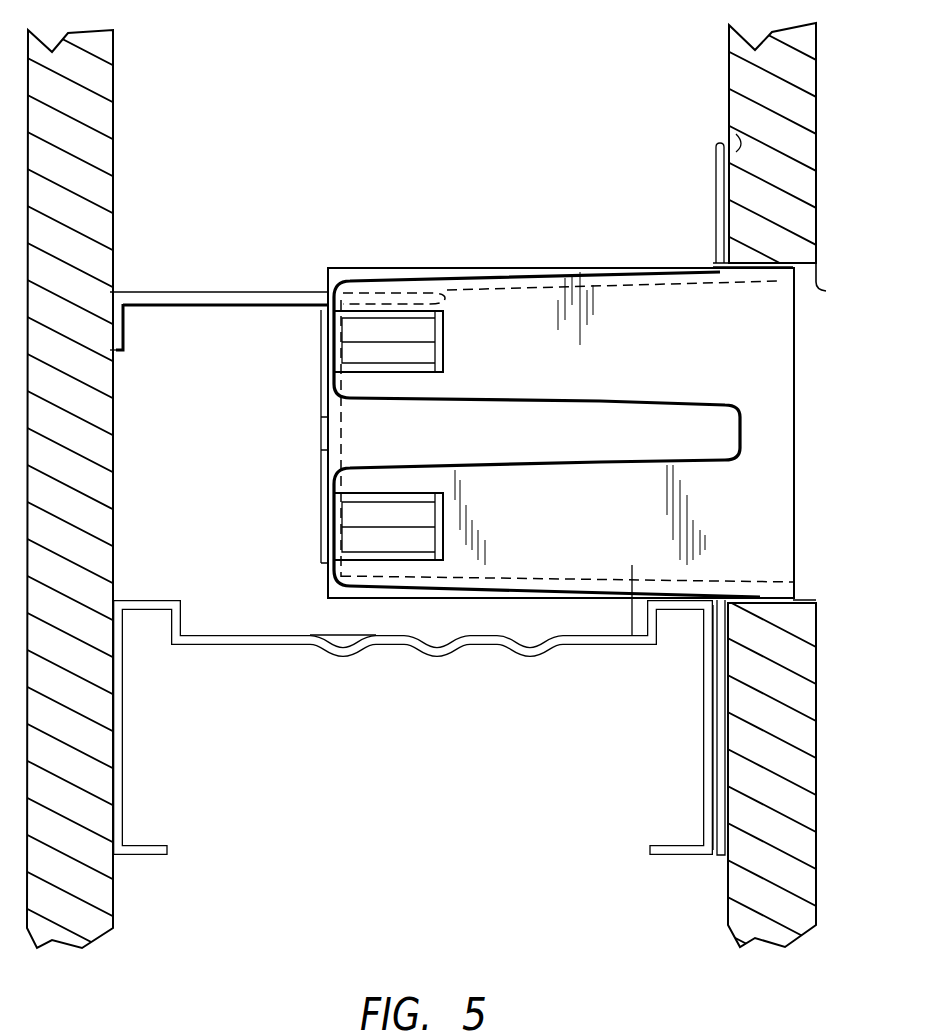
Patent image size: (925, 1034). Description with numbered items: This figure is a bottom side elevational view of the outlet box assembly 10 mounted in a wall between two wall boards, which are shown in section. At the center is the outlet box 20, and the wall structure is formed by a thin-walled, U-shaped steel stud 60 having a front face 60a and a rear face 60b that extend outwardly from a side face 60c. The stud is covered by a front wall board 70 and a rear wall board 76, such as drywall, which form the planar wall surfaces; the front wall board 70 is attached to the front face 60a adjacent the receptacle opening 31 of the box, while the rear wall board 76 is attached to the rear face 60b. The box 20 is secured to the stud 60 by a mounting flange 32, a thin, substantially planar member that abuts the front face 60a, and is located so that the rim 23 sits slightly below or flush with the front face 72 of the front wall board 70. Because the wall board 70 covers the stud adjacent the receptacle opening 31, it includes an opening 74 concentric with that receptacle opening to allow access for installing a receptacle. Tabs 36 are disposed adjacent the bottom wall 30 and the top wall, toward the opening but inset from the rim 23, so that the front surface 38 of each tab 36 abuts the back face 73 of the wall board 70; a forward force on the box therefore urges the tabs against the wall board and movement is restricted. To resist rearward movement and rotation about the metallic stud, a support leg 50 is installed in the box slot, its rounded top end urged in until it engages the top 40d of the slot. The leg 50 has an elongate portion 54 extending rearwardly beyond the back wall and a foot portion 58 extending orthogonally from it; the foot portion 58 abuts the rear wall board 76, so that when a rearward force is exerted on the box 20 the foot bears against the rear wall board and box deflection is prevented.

The outlet box assembly 10 is at (586, 395).
The outlet box 20 is at (525, 296).
The rim 23 is at (794, 373).
The bottom wall 30 is at (632, 645).
The receptacle opening 31 is at (794, 520).
The mounting flange 32 is at (722, 852).
The tab 36 is at (717, 190).
The front surface 38 is at (736, 136).
The top of slot 40d is at (440, 276).
The support leg 50 is at (178, 292).
The elongate portion 54 is at (245, 290).
The foot portion 58 is at (124, 352).
The steel stud 60 is at (413, 730).
The front face 60a is at (705, 815).
The rear face 60b is at (122, 805).
The side face 60c is at (360, 653).
The front wall board 70 is at (748, 66).
The front face 72 is at (836, 281).
The back face 73 is at (729, 108).
The opening 74 is at (797, 600).
The rear wall board 76 is at (92, 45).